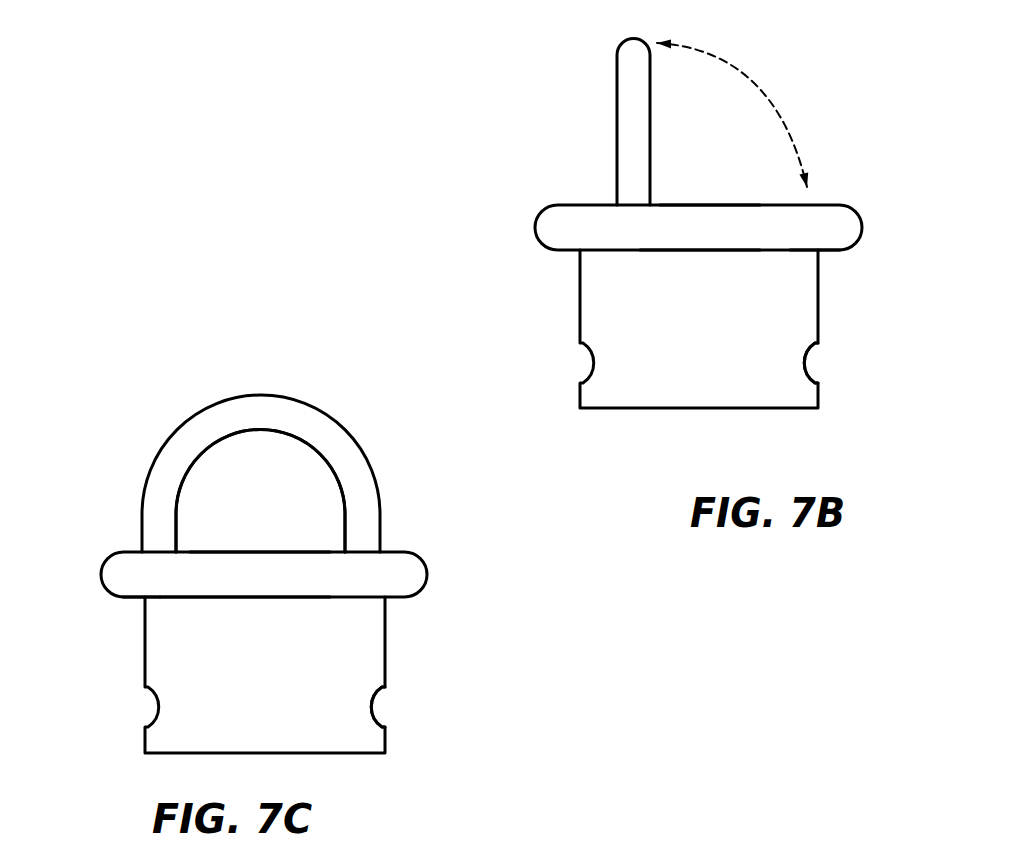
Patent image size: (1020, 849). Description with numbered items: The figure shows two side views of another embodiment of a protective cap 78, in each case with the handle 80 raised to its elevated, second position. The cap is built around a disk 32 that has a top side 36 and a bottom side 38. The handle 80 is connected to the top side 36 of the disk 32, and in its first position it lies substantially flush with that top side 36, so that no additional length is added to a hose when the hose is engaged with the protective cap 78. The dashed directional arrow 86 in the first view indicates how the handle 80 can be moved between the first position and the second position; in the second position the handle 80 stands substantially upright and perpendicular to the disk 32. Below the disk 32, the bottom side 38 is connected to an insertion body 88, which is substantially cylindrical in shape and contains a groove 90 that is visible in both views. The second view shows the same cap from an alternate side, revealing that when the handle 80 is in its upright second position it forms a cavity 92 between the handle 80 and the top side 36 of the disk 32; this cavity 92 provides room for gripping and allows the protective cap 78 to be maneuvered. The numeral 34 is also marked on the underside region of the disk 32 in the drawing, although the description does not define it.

In FIG. 7B, the disk 32 is at (850, 205).
In FIG. 7C, the disk 32 is at (428, 562).
In FIG. 7B, the bottom surface of cross bar 34 is at (822, 251).
In FIG. 7C, the bottom surface of cross bar 34 is at (120, 573).
In FIG. 7B, the top side 36 is at (700, 205).
In FIG. 7C, the top side 36 is at (245, 552).
In FIG. 7B, the bottom side 38 is at (700, 251).
In FIG. 7C, the bottom side 38 is at (215, 598).
In FIG. 7B, the protective cap 78 is at (507, 129).
In FIG. 7C, the protective cap 78 is at (513, 595).
In FIG. 7B, the handle 80 is at (617, 110).
In FIG. 7C, the handle 80 is at (147, 473).
In FIG. 7B, the dashed directional arrow 86 is at (750, 78).
In FIG. 7B, the insertion body 88 is at (745, 397).
In FIG. 7C, the insertion body 88 is at (180, 665).
In FIG. 7B, the groove 90 is at (812, 360).
In FIG. 7C, the groove 90 is at (375, 708).
In FIG. 7C, the cavity 92 is at (335, 497).